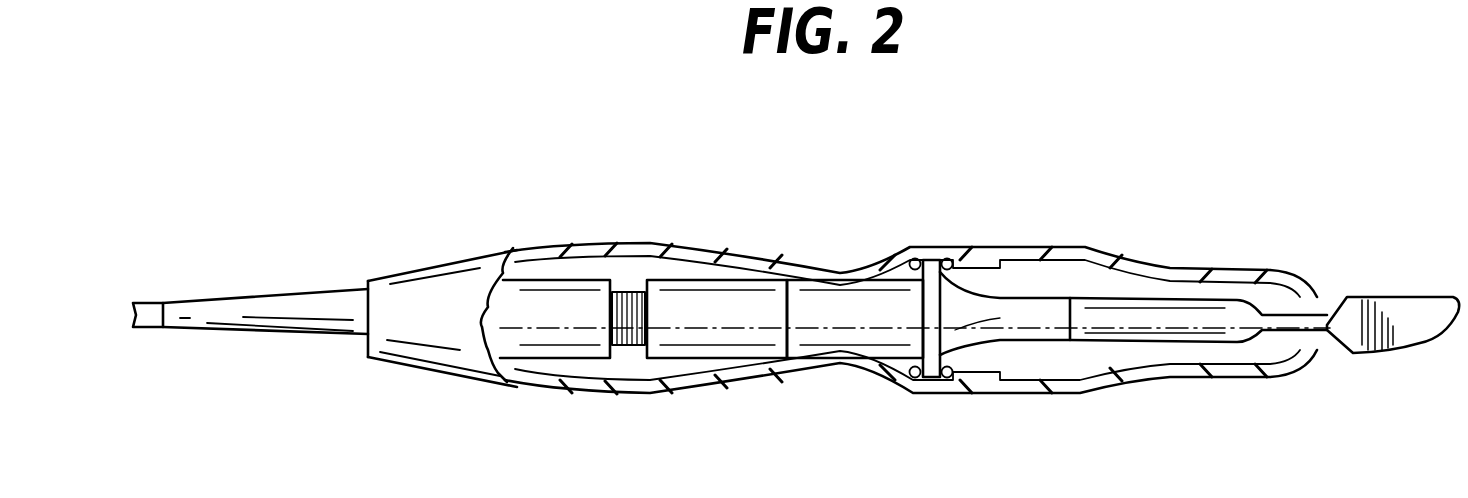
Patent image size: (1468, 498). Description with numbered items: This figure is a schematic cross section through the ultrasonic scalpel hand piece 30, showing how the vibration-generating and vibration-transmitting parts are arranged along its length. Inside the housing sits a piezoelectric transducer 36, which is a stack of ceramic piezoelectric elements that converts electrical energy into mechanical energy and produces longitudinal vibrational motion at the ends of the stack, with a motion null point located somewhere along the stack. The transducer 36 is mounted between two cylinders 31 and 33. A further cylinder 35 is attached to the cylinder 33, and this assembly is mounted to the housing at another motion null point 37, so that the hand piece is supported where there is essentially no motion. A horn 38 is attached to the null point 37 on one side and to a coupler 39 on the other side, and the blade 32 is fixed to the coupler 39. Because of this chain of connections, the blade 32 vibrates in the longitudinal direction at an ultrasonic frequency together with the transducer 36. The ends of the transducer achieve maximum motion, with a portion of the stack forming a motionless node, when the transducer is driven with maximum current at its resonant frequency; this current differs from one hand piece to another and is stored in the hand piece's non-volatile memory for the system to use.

The ultrasonic hand piece 30 is at (802, 238).
The cylinder 31 is at (535, 297).
The blade 32 is at (1400, 313).
The cylinder 33 is at (713, 337).
The cylinder 35 is at (833, 337).
The piezoelectric transducer 36 is at (623, 297).
The motion null point 37 is at (942, 258).
The horn 38 is at (980, 310).
The coupler 39 is at (1158, 315).